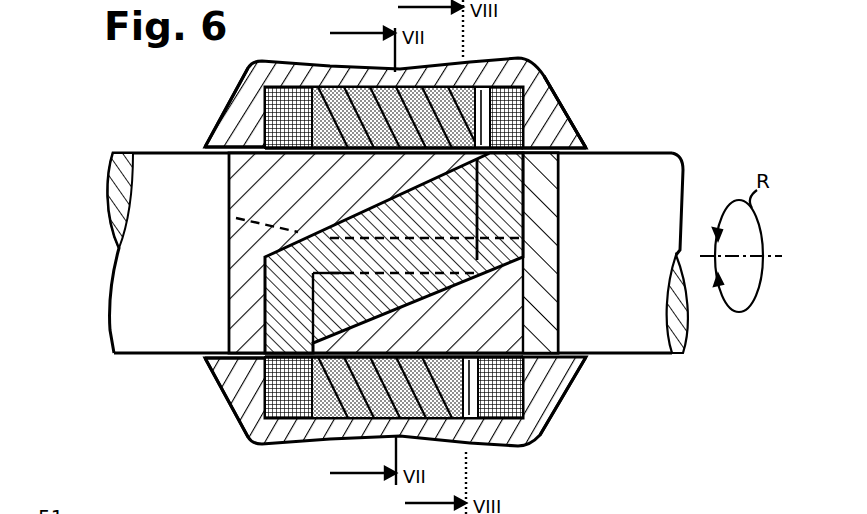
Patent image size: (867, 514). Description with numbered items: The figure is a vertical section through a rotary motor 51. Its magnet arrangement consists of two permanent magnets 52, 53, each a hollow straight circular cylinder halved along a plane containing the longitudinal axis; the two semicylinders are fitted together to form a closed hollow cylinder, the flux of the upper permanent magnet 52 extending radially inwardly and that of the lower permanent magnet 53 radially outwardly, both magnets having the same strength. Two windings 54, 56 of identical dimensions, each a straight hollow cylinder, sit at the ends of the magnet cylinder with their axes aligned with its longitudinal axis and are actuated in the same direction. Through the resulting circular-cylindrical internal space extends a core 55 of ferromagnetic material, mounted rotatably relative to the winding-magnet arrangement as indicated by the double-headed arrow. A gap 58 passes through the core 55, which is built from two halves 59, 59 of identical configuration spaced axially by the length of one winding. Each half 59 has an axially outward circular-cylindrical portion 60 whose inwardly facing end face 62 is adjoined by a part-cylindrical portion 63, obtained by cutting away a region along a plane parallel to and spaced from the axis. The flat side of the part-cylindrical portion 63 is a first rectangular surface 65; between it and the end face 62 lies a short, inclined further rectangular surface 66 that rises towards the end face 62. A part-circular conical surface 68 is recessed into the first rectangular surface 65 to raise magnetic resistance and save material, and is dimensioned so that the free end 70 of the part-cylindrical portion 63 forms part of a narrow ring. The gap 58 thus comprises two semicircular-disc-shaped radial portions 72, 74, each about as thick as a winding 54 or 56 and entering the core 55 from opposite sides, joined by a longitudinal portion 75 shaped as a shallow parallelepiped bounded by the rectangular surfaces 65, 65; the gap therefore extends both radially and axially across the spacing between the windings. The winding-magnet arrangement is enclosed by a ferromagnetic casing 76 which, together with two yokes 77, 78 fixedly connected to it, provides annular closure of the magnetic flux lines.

The rotary motor 51 is at (632, 104).
The upper permanent magnet 52 is at (326, 88).
The lower permanent magnet 53 is at (320, 442).
The winding 54 is at (300, 92).
The core 55 is at (672, 190).
The winding 56 is at (548, 100).
The gap 58 is at (263, 288).
The half of the core 59 is at (124, 358).
The circular-cylindrical portion 60 is at (158, 164).
The end face 62 is at (545, 198).
The part-cylindrical portion 63 is at (378, 102).
The first rectangular surface 65 is at (236, 218).
The further rectangular surface 66 is at (264, 257).
The part-circular conical surface 68 is at (428, 92).
The free end 70 is at (479, 96).
The radial portion of the gap 72 is at (560, 140).
The radial portion of the gap 74 is at (226, 378).
The longitudinal portion of the gap 75 is at (522, 274).
The casing 76 is at (272, 70).
The yoke 77 is at (233, 108).
The yoke 78 is at (526, 72).